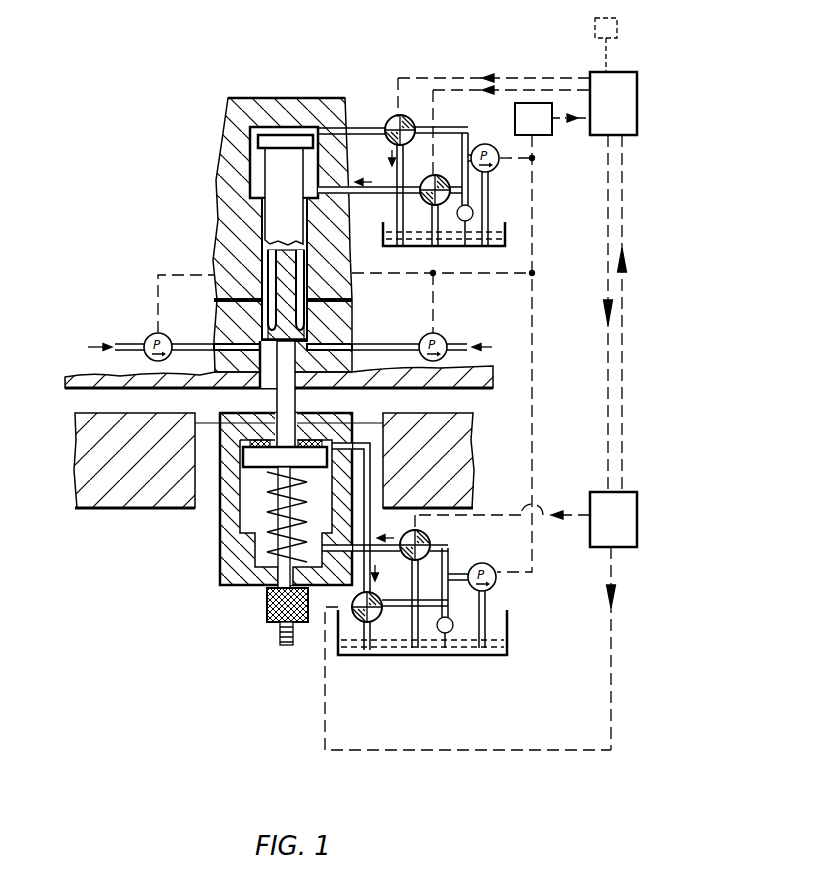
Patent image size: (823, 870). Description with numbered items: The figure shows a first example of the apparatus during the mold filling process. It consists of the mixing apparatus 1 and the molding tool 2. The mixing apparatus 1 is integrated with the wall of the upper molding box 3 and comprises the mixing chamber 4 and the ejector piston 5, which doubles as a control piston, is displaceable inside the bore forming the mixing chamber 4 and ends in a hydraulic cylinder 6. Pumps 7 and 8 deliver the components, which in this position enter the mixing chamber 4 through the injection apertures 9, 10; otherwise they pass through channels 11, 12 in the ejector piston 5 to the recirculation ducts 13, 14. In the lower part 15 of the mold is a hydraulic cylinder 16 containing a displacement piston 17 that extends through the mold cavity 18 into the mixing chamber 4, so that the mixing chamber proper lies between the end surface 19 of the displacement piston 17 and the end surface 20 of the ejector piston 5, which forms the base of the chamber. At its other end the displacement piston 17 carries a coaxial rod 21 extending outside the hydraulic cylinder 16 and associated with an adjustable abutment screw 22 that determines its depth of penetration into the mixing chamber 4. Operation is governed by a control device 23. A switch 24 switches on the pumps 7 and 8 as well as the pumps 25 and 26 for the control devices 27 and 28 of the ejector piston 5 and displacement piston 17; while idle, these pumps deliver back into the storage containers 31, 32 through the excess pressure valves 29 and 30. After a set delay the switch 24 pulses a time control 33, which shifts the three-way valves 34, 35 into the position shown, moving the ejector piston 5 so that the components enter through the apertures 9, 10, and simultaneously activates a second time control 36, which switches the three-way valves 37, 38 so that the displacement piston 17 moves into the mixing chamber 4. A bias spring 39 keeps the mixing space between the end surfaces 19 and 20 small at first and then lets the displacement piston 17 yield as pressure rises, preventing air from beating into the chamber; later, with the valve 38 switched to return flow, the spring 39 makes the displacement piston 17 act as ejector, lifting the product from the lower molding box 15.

The mixing apparatus 1 is at (215, 200).
The molding tool 2 is at (100, 521).
The upper molding box 3 is at (80, 373).
The mixing chamber 4 is at (345, 353).
The ejector piston 5 is at (272, 224).
The hydraulic cylinder 6 is at (258, 166).
The pump 7 is at (443, 339).
The pump 8 is at (149, 337).
The injection aperture 9 is at (302, 338).
The injection aperture 10 is at (262, 337).
The channel 11 is at (322, 242).
The channel 12 is at (268, 270).
The recirculation duct 13 is at (330, 292).
The recirculation duct 14 is at (215, 300).
The lower part of the mold 15 is at (96, 453).
The hydraulic cylinder 16 is at (230, 569).
The displacement piston 17 is at (292, 402).
The mold cavity 18 is at (100, 402).
The end surface of the displacement piston 19 is at (272, 352).
The end surface of the ejector piston 20 is at (340, 311).
The coaxial rod 21 is at (272, 588).
The adjustable abutment screw 22 is at (275, 623).
The control device 23 is at (541, 64).
The switch 24 is at (547, 130).
The pump 25 is at (503, 165).
The pump 26 is at (478, 563).
The control device 27 is at (391, 67).
The control device 28 is at (437, 668).
The excess pressure valve 29 is at (474, 207).
The excess pressure valve 30 is at (453, 633).
The storage container 31 is at (500, 239).
The storage container 32 is at (393, 652).
The time control 33 is at (622, 78).
The three-way valve 34 is at (440, 178).
The three-way valve 35 is at (388, 117).
The second time control 36 is at (625, 500).
The three-way valve 37 is at (430, 542).
The three-way valve 38 is at (363, 625).
The bias spring 39 is at (273, 514).